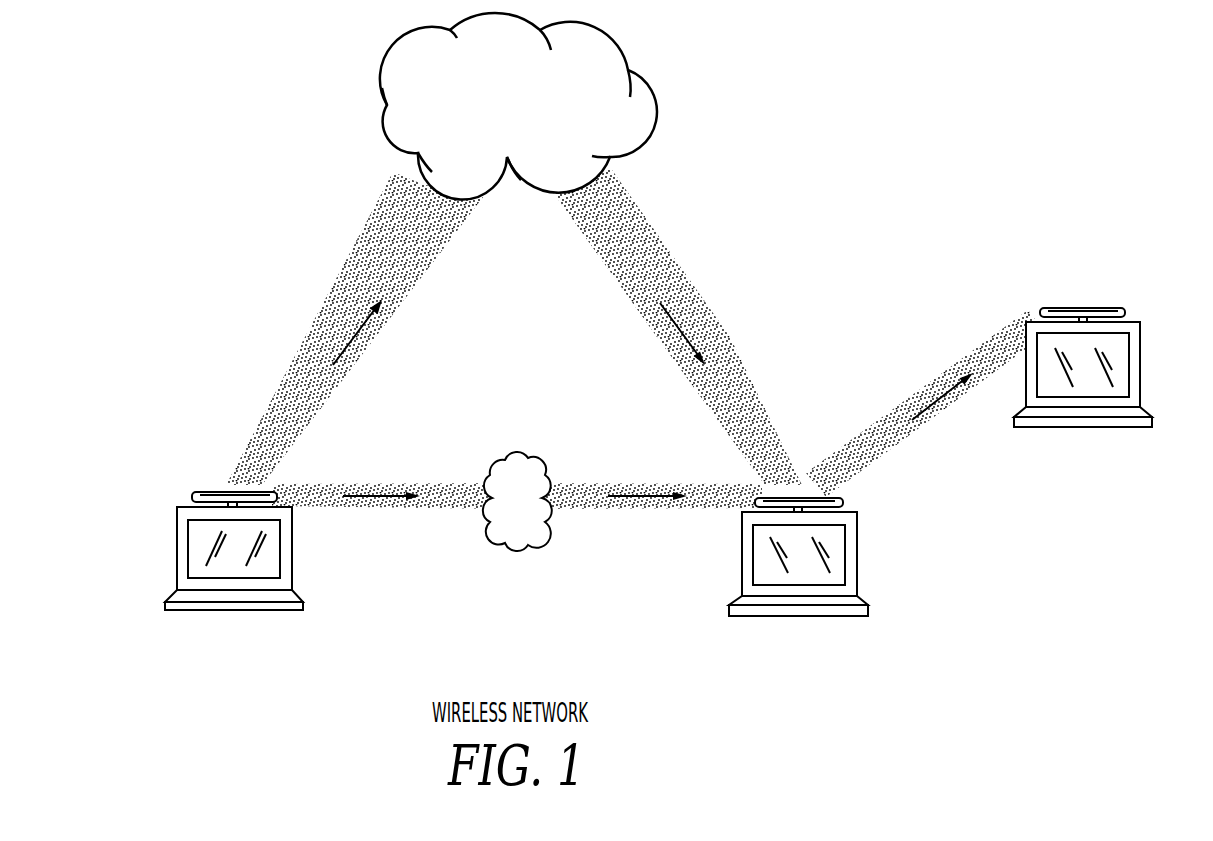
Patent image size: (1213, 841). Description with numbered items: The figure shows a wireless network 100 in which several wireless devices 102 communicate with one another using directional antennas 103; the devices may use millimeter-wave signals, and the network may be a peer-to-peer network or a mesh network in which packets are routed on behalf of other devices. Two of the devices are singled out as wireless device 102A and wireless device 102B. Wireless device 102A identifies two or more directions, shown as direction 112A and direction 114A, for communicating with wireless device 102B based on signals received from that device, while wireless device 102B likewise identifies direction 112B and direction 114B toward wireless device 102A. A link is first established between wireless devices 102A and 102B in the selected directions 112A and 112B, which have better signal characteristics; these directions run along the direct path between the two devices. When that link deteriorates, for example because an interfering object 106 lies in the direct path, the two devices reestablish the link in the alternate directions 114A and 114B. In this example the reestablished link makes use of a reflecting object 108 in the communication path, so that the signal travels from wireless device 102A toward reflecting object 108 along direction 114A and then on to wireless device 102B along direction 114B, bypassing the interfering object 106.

The wireless network 100 is at (977, 88).
The wireless device 102 is at (657, 469).
The wireless device 102A is at (293, 558).
The wireless device 102B is at (742, 565).
The directional antenna 103 is at (192, 497).
The interfering object 106 is at (517, 452).
The reflecting object 108 is at (604, 31).
The direction 112A is at (390, 487).
The direction 112B is at (634, 487).
The direction 114A is at (367, 257).
The direction 114B is at (670, 260).